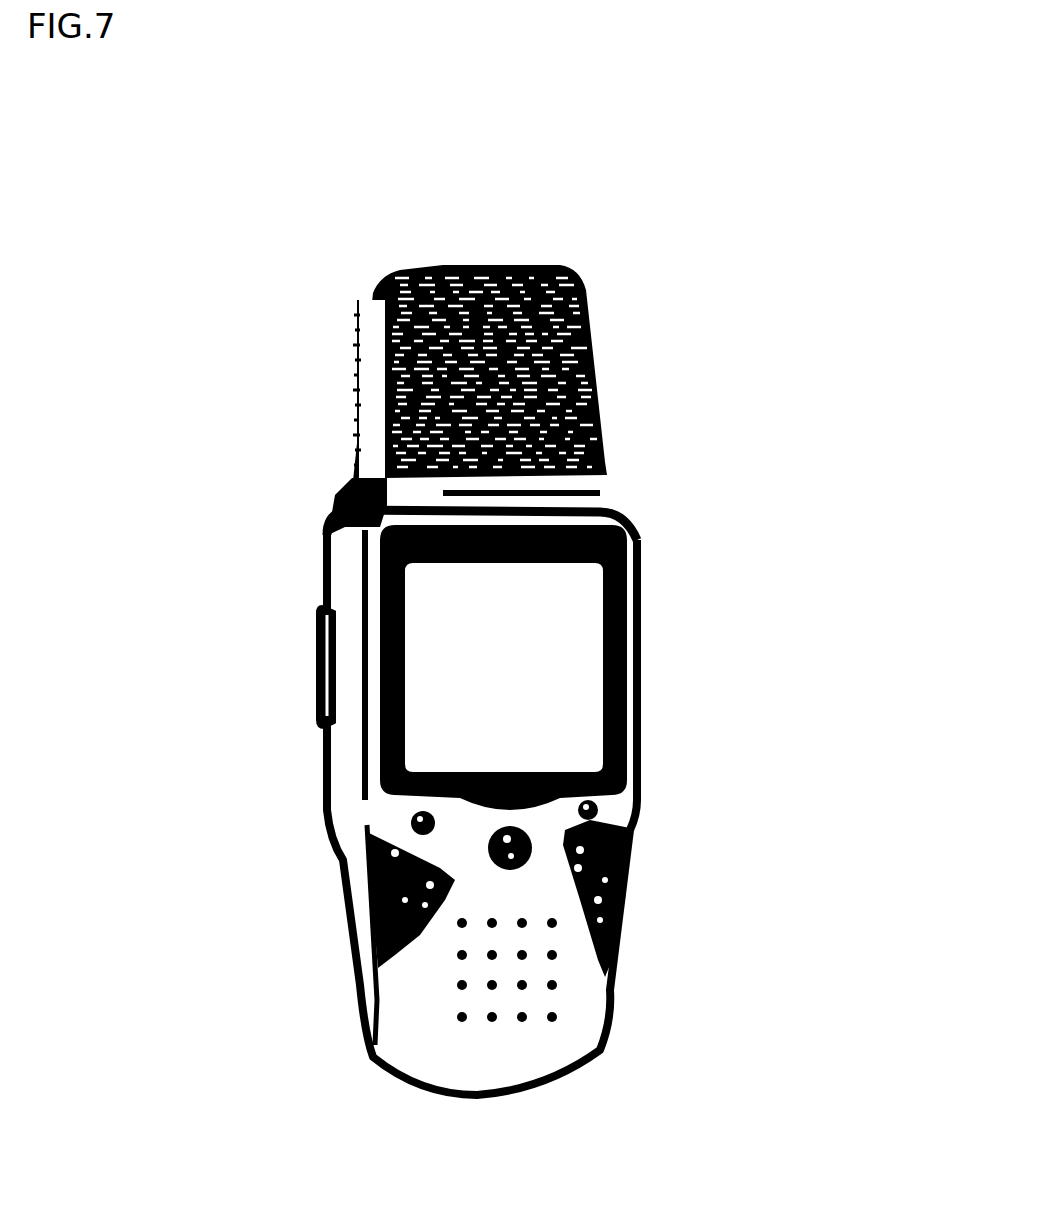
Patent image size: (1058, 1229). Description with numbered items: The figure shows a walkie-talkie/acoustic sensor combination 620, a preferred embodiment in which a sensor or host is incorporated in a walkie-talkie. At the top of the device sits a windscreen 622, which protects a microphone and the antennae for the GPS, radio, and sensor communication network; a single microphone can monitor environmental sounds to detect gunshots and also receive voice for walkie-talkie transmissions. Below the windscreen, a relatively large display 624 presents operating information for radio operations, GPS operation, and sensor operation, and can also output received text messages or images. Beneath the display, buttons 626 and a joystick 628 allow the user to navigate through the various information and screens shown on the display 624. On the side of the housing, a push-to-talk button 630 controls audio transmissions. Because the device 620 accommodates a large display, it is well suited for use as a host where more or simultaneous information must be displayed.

The walkie-talkie/acoustic sensor combination 620 is at (700, 583).
The windscreen 622 is at (605, 355).
The display 624 is at (573, 665).
The buttons 626 is at (410, 826).
The joystick 628 is at (537, 853).
The push-to-talk button 630 is at (315, 659).